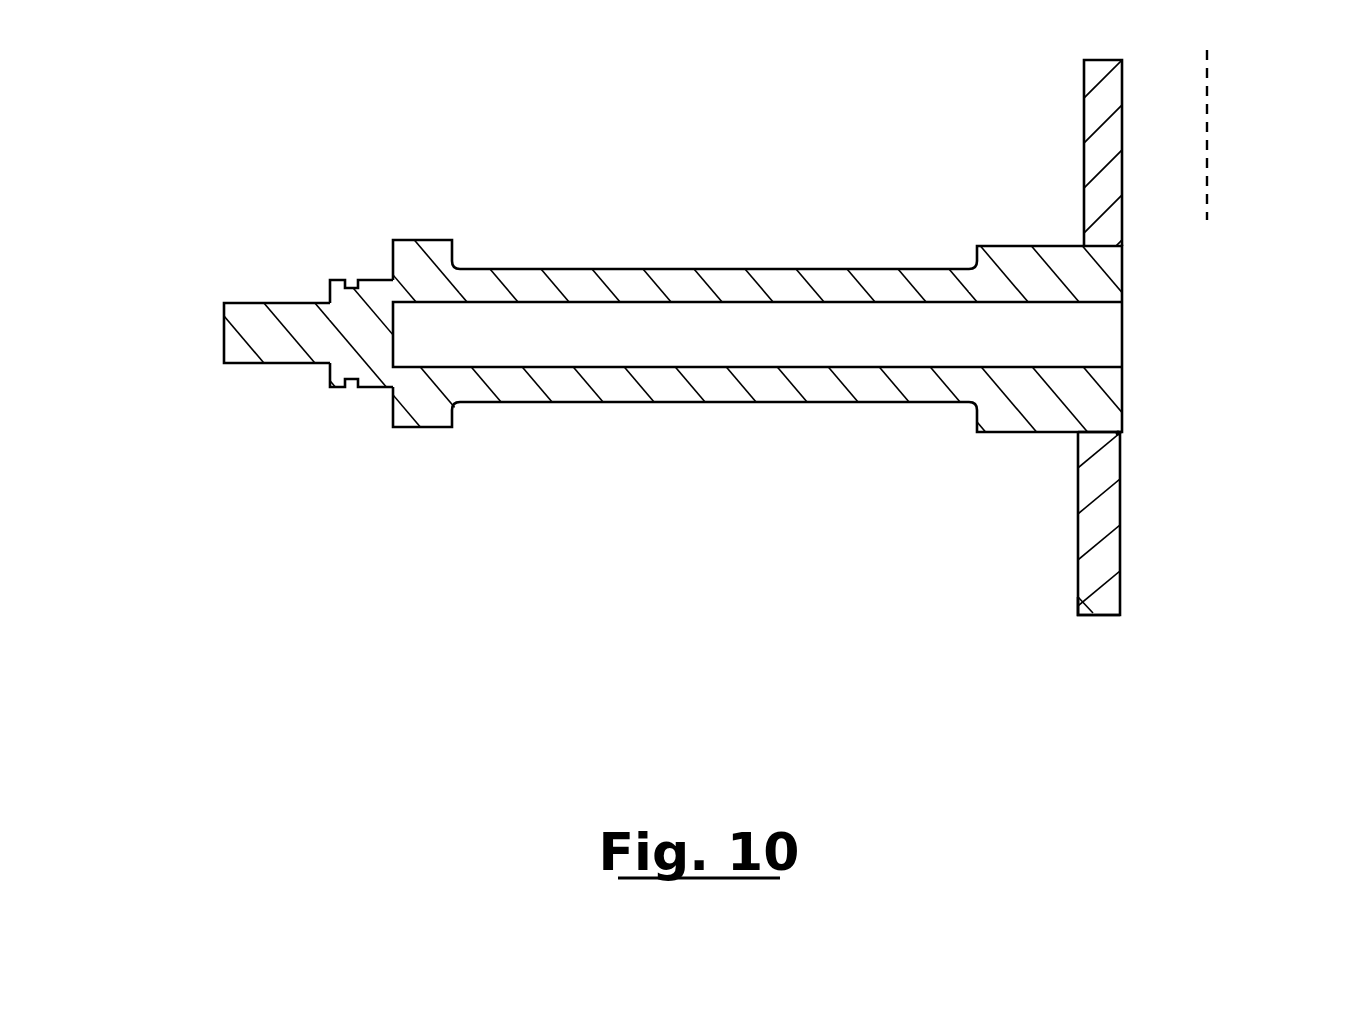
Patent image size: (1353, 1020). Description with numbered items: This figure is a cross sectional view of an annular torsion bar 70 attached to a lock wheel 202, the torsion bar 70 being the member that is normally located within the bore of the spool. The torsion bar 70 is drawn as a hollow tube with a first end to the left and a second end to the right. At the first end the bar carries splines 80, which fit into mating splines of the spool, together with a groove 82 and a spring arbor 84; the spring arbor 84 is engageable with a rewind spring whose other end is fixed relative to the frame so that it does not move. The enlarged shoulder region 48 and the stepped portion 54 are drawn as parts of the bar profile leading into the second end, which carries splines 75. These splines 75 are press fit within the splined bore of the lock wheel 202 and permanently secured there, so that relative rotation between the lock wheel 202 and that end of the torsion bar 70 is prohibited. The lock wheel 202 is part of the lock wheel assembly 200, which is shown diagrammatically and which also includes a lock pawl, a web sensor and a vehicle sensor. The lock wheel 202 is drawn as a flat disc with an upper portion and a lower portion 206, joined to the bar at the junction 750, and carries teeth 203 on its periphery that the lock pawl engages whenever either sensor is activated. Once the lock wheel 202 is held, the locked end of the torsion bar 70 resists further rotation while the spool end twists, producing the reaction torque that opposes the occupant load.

The spring arbor 84 is at (252, 323).
The groove 82 is at (345, 383).
The flange 48 is at (423, 238).
The splines 80 is at (417, 428).
The torsion bar 70 is at (607, 268).
The end flange 54 is at (990, 261).
The splines 75 is at (1050, 252).
The lock wheel assembly 200 is at (1208, 347).
The lock wheel 202 is at (1112, 194).
The lower plate portion 206 is at (1093, 488).
The junction edge 750 is at (1118, 433).
The teeth 203 is at (1080, 600).